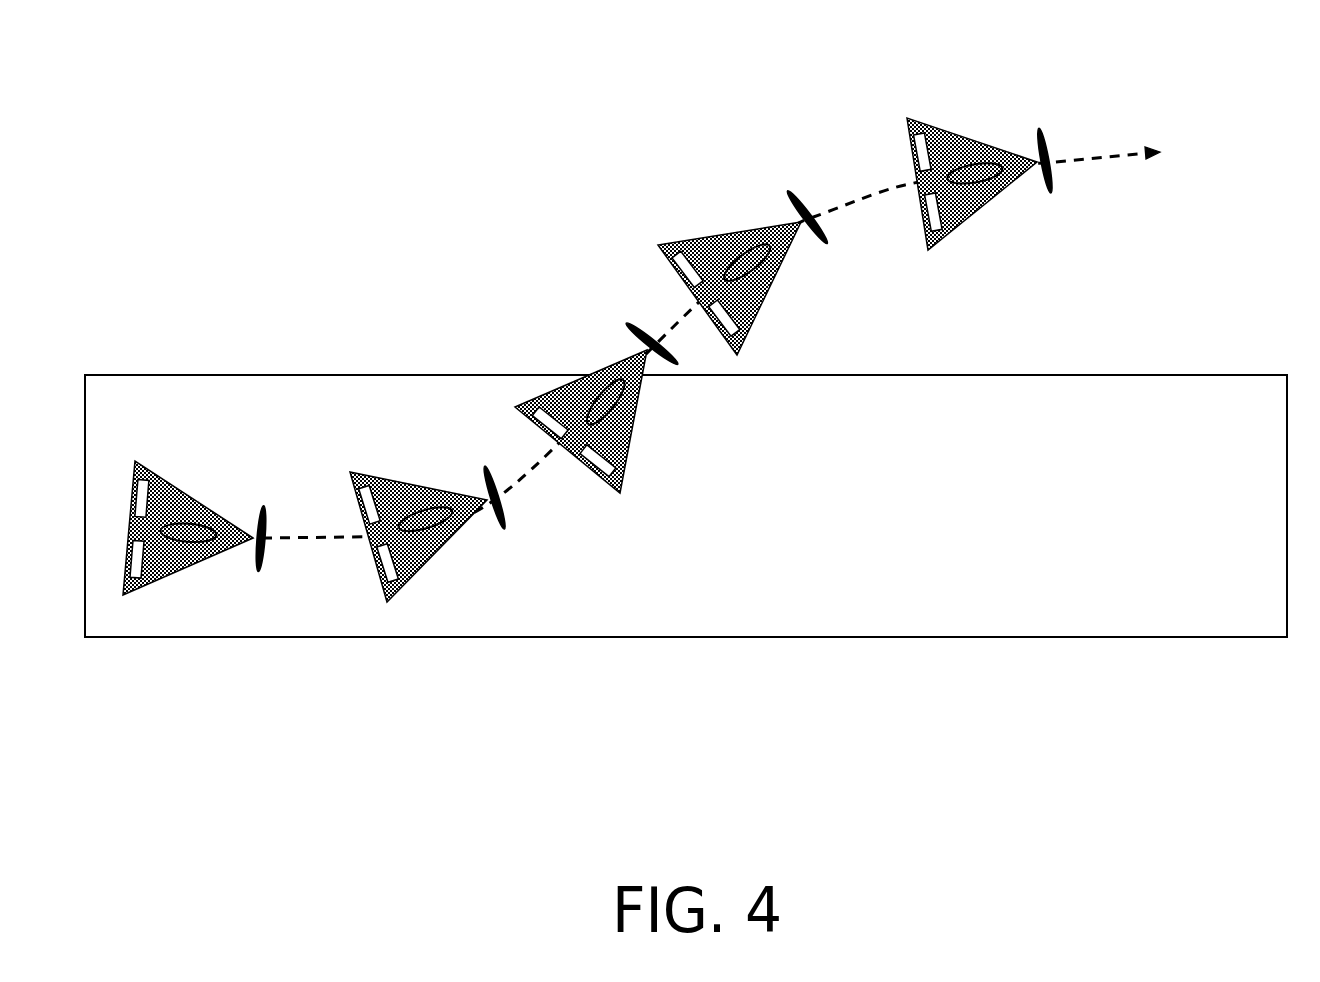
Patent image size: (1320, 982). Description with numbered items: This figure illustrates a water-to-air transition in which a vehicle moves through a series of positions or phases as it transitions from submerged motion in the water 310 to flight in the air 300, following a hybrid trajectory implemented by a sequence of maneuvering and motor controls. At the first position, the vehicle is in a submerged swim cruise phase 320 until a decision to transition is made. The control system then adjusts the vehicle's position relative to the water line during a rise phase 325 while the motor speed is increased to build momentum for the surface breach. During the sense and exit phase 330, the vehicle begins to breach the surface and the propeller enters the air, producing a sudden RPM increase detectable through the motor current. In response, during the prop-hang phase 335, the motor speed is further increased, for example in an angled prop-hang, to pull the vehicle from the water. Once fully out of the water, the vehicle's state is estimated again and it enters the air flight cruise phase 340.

The air 300 is at (376, 95).
The water 310 is at (1036, 524).
The submerged swim cruise phase 320 is at (170, 577).
The rise phase 325 is at (437, 550).
The sense and exit phase 330 is at (588, 375).
The prop-hang phase 335 is at (740, 230).
The air flight cruise phase 340 is at (982, 142).